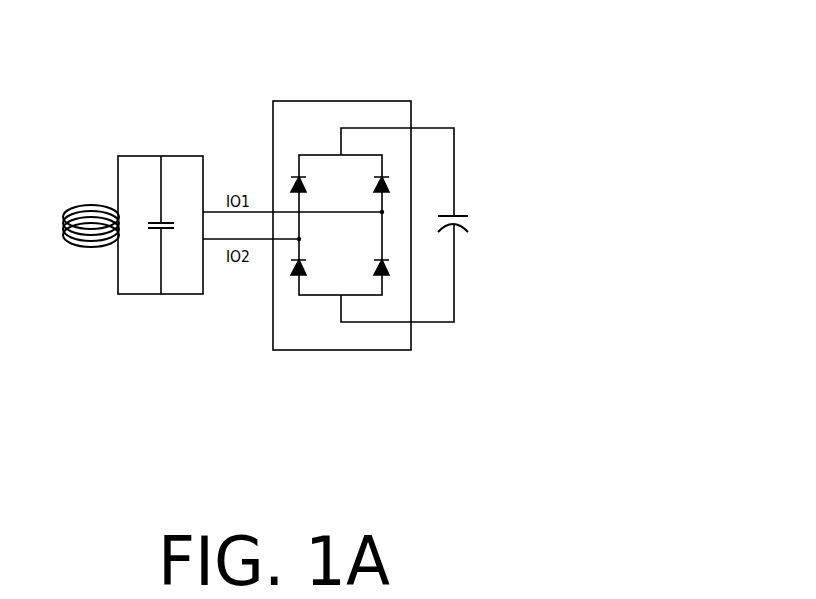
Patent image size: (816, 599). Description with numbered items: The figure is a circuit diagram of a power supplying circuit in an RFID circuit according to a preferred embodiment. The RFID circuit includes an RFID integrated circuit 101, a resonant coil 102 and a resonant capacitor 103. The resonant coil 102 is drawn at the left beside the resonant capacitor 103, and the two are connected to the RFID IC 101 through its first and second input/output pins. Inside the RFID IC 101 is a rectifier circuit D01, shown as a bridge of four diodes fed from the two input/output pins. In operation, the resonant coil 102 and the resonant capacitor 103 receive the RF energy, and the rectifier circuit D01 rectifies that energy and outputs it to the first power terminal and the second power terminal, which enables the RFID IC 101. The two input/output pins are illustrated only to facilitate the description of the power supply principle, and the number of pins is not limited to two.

The RFID integrated circuit 101 is at (370, 228).
The resonant coil 102 is at (80, 247).
The resonant capacitor 103 is at (153, 232).
The rectifier circuit D01 is at (315, 158).